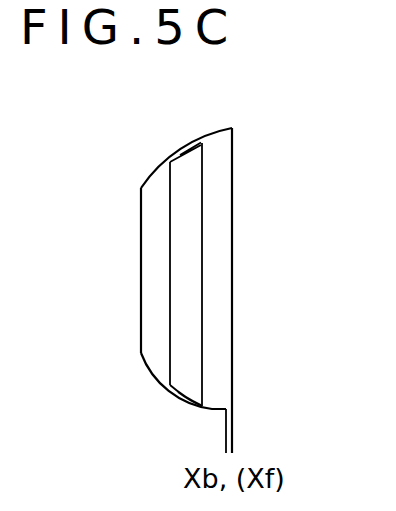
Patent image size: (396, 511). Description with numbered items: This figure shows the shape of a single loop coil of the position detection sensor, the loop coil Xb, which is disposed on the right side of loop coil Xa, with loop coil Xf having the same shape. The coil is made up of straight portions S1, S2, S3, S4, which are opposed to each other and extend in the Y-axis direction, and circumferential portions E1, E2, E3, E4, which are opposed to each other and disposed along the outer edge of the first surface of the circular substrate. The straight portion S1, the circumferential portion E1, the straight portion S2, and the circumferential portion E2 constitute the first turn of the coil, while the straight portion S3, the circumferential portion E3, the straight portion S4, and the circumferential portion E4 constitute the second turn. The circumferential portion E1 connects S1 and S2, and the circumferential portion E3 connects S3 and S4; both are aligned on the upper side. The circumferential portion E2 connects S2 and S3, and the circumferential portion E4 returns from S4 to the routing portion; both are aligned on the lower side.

The straight portion S1 is at (233, 235).
The straight portion S2 is at (140, 246).
The straight portion S3 is at (203, 293).
The straight portion S4 is at (170, 303).
The circumferential portion E1 is at (214, 128).
The circumferential portion E2 is at (156, 381).
The circumferential portion E3 is at (181, 153).
The circumferential portion E4 is at (191, 405).